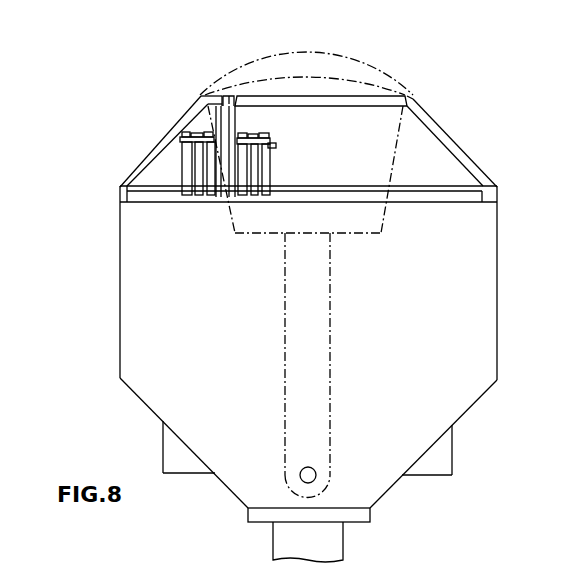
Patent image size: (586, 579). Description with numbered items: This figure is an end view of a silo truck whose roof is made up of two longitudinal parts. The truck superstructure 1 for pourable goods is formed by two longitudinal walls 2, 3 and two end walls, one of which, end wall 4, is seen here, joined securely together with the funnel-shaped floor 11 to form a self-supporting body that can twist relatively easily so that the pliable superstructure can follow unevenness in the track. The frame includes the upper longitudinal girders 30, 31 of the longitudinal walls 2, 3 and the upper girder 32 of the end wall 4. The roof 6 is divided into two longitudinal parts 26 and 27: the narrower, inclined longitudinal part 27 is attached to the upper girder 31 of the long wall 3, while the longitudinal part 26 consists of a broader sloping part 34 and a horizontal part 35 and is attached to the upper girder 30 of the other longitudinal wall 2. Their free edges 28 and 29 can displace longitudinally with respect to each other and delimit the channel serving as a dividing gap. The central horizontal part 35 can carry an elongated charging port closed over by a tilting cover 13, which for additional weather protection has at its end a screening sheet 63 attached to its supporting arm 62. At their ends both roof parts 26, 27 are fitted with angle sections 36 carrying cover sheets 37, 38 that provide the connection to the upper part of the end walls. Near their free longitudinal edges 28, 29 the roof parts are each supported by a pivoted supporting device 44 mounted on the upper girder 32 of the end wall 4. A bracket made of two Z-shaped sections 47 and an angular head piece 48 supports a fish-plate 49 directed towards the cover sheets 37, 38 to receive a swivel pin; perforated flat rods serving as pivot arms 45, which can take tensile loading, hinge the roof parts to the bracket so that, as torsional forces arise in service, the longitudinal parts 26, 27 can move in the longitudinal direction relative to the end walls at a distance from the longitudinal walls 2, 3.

The truck superstructure 1 is at (128, 436).
The longitudinal wall 2 is at (497, 283).
The longitudinal wall 3 is at (120, 278).
The end wall 4 is at (458, 350).
The roof 6 is at (76, 183).
The floor 11 is at (465, 423).
The tilting cover 13 is at (297, 68).
The longitudinal part 26 is at (450, 112).
The longitudinal part 27 is at (152, 144).
The free edge 28 is at (233, 94).
The free edge 29 is at (225, 93).
The upper longitudinal girder 30 is at (483, 200).
The upper longitudinal girder 31 is at (122, 194).
The upper girder 32 is at (413, 200).
The sloping part 34 is at (470, 172).
The horizontal part 35 is at (343, 95).
The angle section 36 is at (358, 100).
The cover sheet 37 is at (417, 153).
The cover sheet 38 is at (163, 173).
The pivoted supporting device 44 is at (288, 168).
The pivot arm 45 is at (178, 137).
The Z-shaped section 47 is at (222, 150).
The angular head piece 48 is at (258, 144).
The fish-plate 49 is at (197, 137).
The supporting arm 62 is at (312, 375).
The screening sheet 63 is at (270, 212).